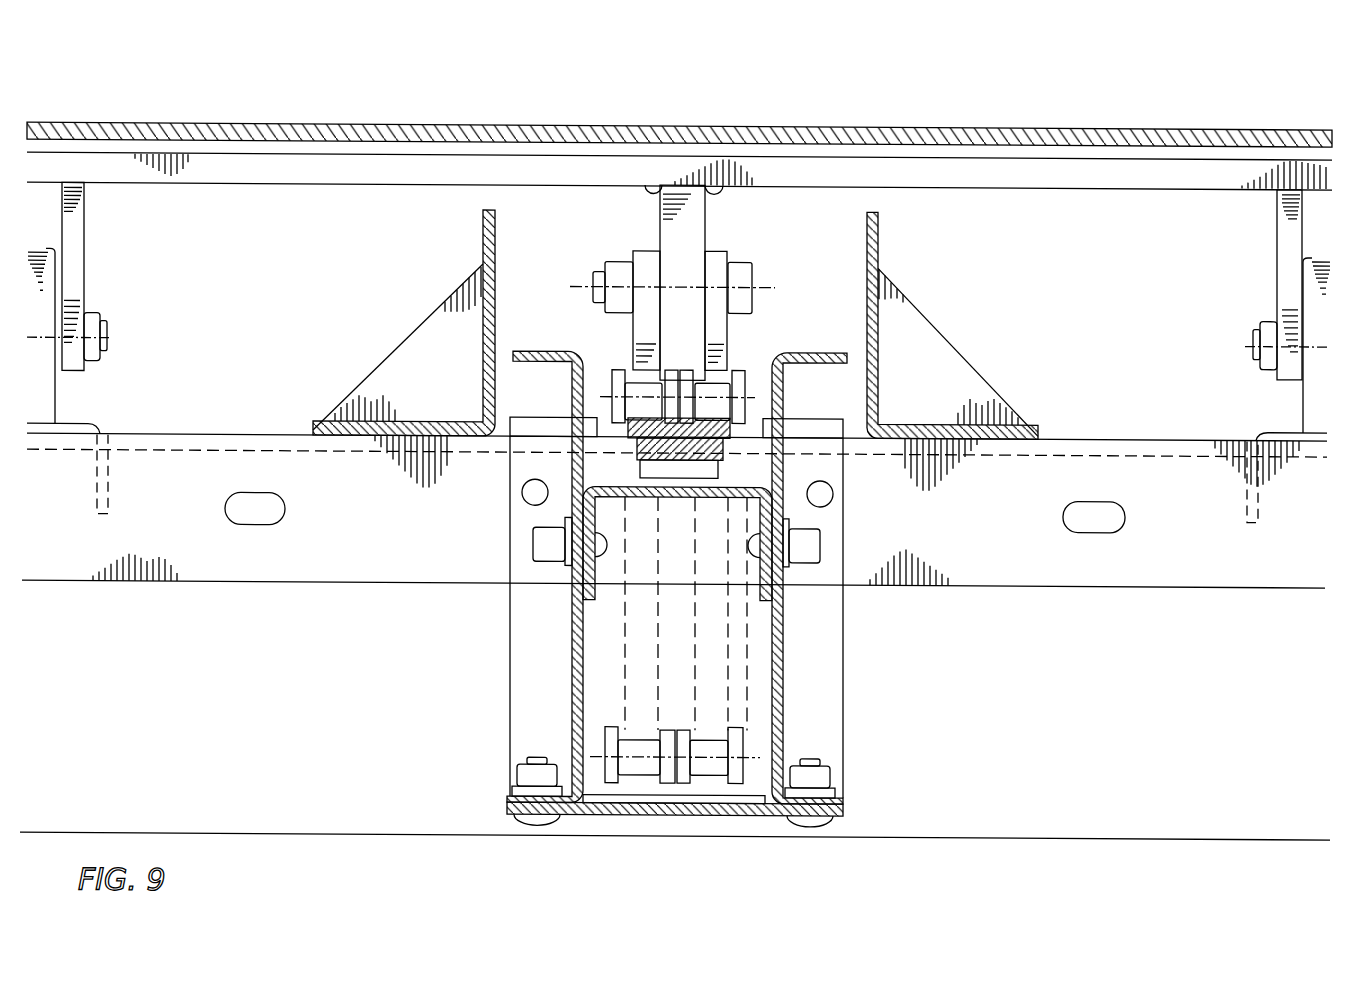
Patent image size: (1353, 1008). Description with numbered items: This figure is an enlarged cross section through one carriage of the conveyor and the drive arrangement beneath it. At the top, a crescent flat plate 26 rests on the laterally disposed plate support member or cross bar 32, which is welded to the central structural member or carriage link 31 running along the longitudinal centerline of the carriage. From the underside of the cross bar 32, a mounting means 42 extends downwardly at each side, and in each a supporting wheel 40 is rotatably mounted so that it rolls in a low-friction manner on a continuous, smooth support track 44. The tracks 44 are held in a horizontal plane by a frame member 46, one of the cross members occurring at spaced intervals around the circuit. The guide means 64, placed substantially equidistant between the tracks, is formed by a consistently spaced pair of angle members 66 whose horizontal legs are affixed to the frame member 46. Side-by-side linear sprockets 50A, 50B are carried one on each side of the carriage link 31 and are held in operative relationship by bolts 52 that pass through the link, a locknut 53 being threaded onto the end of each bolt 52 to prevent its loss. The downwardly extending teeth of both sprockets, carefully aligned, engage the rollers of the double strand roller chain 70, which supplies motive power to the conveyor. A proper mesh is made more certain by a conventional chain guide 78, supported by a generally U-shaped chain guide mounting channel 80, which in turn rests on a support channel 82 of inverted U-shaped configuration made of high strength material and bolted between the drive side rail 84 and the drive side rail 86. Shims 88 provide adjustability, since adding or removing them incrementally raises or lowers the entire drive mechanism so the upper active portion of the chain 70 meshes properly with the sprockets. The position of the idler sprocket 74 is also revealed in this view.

The crescent flat plate 26 is at (715, 133).
The plate support member or cross bar 32 is at (905, 175).
The mounting means 42 is at (70, 268).
The supporting wheel 40 is at (42, 393).
The support track 44 is at (98, 425).
The frame member 46 is at (942, 581).
The angle member 66 is at (482, 265).
The guide means 64 is at (990, 335).
The central structural member or carriage link 31 is at (688, 226).
The linear sprocket 50A is at (647, 343).
The linear sprocket 50B is at (720, 340).
The bolt 52 is at (747, 276).
The locknut 53 is at (625, 261).
The shim 88 is at (562, 433).
The drive side rail 84 is at (568, 704).
The drive side rail 86 is at (786, 698).
The chain guide 78 is at (733, 426).
The chain guide mounting channel 80 is at (635, 461).
The support channel 82 is at (577, 577).
The idler sprocket 74 is at (718, 644).
The double strand roller chain 70 is at (708, 763).